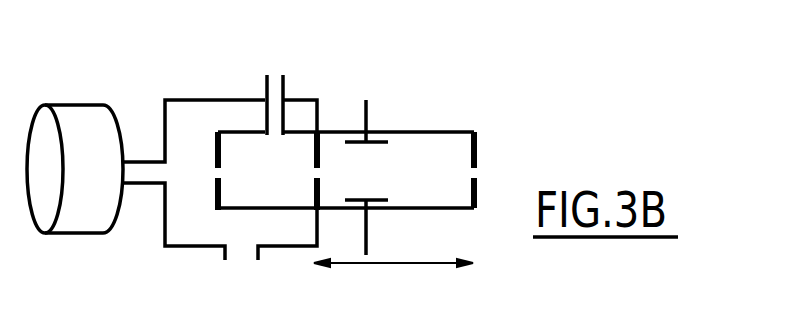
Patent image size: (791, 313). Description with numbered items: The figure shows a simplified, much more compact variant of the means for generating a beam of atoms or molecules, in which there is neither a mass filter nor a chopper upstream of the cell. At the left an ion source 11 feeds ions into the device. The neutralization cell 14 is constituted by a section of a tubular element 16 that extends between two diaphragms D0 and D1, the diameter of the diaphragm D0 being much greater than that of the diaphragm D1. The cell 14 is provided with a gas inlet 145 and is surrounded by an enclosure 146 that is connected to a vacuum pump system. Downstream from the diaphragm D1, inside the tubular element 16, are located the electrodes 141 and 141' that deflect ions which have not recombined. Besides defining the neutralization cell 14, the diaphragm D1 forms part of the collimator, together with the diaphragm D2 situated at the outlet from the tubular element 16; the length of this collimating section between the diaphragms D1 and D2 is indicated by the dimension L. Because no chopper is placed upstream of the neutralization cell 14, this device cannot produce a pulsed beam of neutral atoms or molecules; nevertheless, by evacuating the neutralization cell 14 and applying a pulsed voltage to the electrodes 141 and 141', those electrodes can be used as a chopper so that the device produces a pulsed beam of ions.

The light source / lamp 11 is at (88, 235).
The enclosure 146 is at (190, 246).
The gas inlet 145 is at (284, 94).
The neutralization cell 14 is at (283, 193).
The diaphragm D0 is at (217, 158).
The diaphragm D1 is at (322, 153).
The diaphragm D2 is at (477, 152).
The tubular element 16 is at (422, 133).
The electrode 141 is at (384, 97).
The electrode 141' is at (403, 227).
The length of second cell L is at (393, 277).